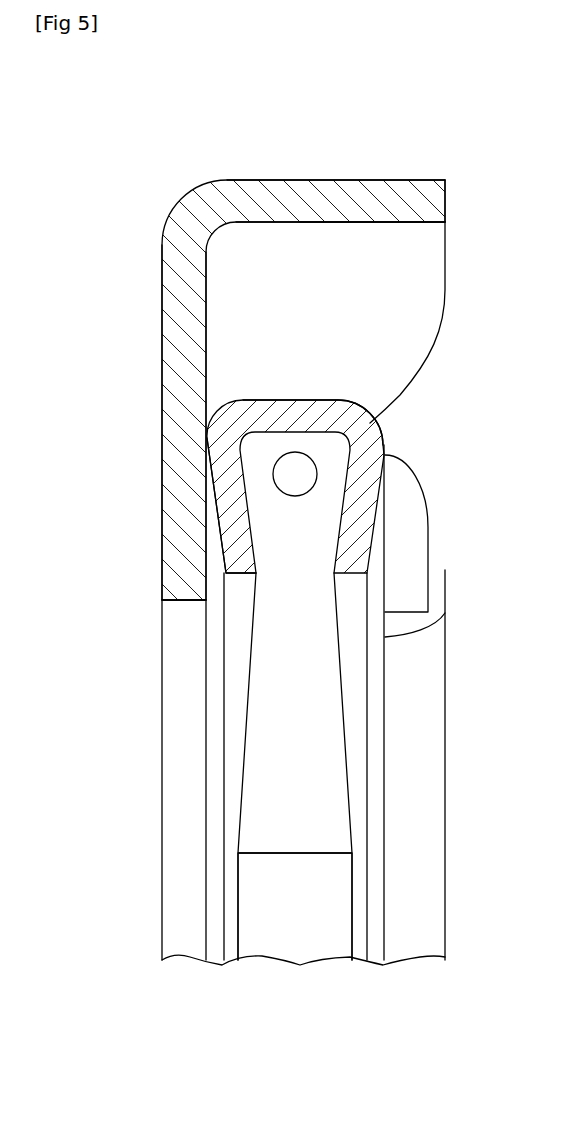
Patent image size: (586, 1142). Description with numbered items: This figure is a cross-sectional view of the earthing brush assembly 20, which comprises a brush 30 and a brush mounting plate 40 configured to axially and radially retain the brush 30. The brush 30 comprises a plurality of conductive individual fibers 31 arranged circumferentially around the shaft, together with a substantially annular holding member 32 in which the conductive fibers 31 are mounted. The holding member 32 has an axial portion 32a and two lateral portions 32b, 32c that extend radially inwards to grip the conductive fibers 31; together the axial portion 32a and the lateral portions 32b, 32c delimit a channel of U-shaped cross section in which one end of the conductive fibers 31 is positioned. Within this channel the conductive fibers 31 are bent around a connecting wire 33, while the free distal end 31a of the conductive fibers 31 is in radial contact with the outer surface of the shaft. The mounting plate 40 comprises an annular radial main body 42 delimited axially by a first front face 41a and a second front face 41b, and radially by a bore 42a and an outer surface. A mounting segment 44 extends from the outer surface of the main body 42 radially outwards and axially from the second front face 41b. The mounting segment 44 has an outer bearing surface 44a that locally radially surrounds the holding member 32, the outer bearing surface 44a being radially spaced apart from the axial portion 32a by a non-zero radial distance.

The earthing brush assembly 20 is at (488, 122).
The brush 30 is at (392, 527).
The conductive individual fibers 31 is at (323, 775).
The free distal end 31a is at (322, 855).
The holding member 32 is at (392, 472).
The axial portion 32a is at (302, 402).
The lateral portion 32b is at (334, 573).
The lateral portion 32c is at (237, 540).
The connecting wire 33 is at (293, 473).
The brush mounting plate 40 is at (152, 404).
The first front face 41a is at (162, 358).
The second front face 41b is at (207, 320).
The annular radial main body 42 is at (197, 600).
The bore 42a is at (183, 602).
The mounting segment 44 is at (342, 172).
The outer bearing surface 44a is at (388, 203).